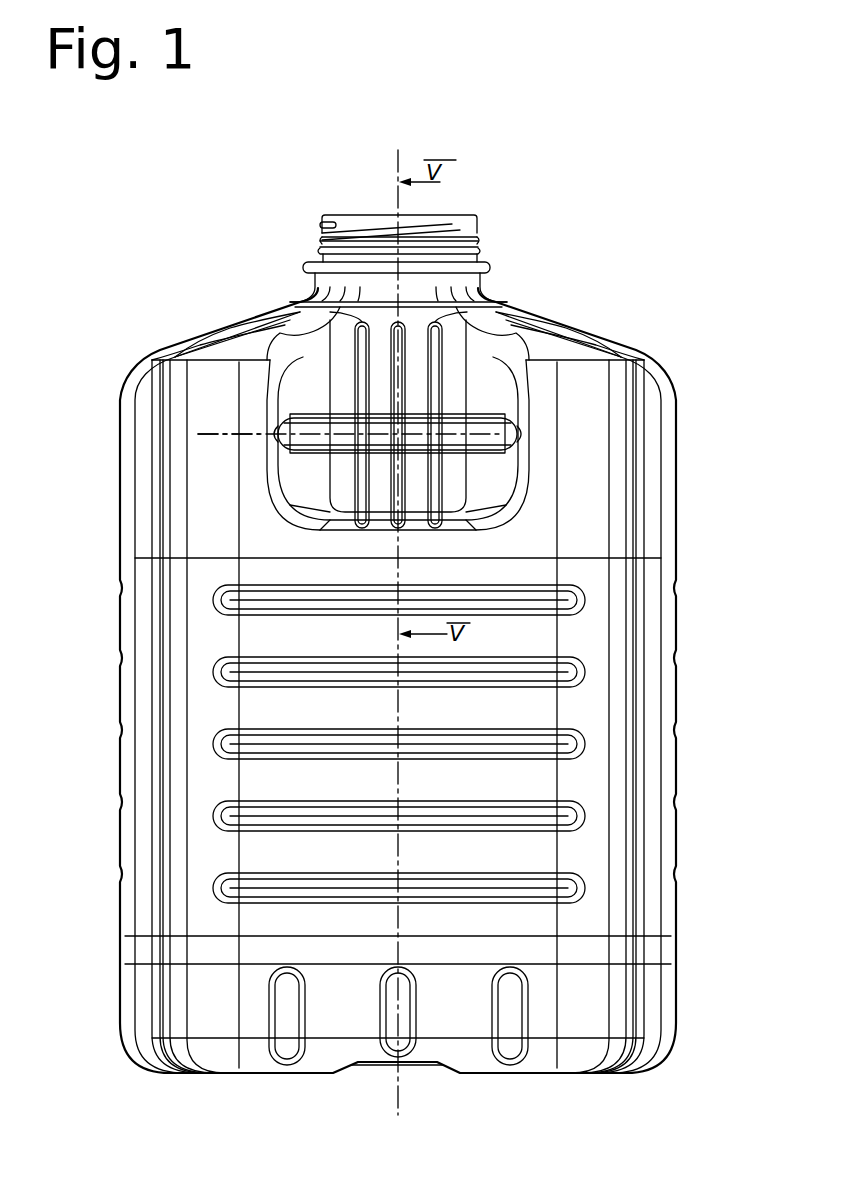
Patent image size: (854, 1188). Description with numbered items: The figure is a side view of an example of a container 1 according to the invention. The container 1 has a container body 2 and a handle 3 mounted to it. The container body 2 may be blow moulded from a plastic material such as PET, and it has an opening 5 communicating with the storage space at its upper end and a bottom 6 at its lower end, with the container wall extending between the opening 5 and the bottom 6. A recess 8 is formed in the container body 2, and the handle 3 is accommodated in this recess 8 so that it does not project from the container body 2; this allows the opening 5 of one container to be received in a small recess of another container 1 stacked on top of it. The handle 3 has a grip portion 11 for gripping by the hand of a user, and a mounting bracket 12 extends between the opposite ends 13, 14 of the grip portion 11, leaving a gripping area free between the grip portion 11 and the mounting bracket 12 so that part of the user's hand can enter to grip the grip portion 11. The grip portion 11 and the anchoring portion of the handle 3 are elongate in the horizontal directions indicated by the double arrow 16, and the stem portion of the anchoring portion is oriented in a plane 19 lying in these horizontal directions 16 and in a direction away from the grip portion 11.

The container 1 is at (635, 268).
The container body 2 is at (670, 360).
The handle 3 is at (497, 458).
The opening 5 is at (452, 222).
The bottom 6 is at (500, 1074).
The recess 8 is at (480, 377).
The grip portion 11 is at (458, 415).
The mounting bracket 12 is at (340, 412).
The end of grip portion 13 is at (282, 440).
The end of grip portion 14 is at (510, 430).
The horizontal directions 16 is at (133, 268).
The plane 19 is at (205, 432).